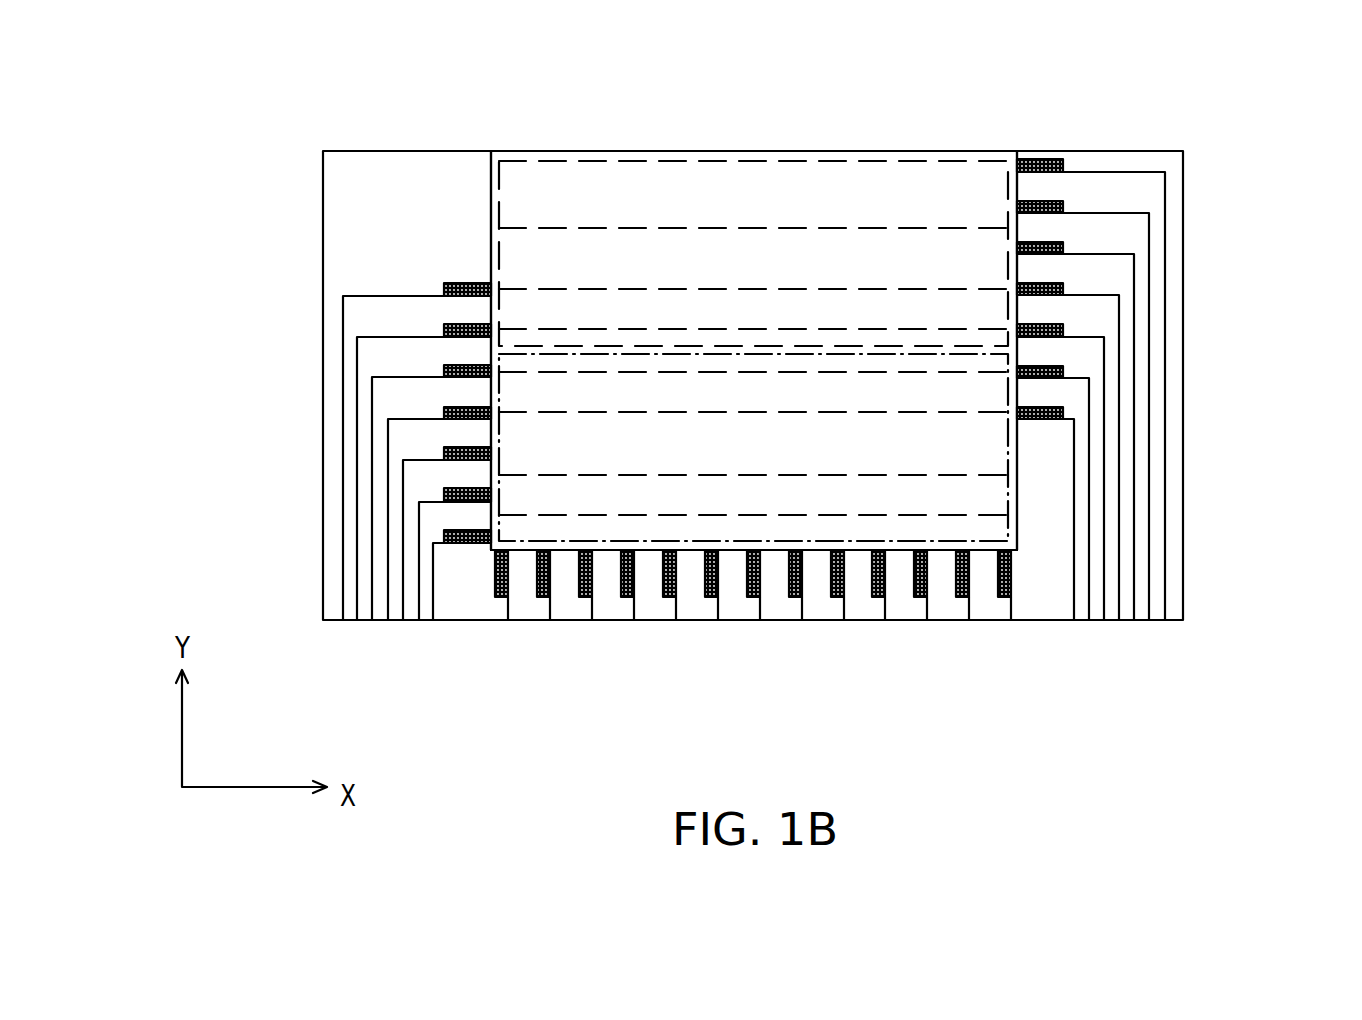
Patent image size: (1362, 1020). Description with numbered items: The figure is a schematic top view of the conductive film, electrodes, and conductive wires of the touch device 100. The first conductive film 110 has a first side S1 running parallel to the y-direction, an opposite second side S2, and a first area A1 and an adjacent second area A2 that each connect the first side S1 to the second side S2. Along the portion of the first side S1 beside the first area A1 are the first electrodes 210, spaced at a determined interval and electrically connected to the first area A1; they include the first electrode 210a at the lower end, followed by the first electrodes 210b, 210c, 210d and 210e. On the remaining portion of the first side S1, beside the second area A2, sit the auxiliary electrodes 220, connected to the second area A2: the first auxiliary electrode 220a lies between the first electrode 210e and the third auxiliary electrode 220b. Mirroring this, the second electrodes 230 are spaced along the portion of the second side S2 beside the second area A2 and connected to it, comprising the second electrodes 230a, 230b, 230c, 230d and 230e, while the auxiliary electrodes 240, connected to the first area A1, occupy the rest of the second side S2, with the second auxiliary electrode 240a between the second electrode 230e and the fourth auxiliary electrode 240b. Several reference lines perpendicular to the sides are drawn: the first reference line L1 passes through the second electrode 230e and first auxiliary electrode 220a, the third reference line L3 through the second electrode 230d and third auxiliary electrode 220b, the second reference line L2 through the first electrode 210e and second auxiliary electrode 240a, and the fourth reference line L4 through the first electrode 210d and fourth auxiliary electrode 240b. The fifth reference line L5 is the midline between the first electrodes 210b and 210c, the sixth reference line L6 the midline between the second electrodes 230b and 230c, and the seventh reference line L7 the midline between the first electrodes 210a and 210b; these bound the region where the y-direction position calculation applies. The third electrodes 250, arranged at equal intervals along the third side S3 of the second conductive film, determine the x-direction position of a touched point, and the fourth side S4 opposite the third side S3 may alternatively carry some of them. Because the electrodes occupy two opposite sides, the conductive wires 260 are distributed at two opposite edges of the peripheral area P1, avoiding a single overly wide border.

The touch device 100 is at (1265, 678).
The first conductive film 110 is at (835, 185).
The first electrodes 210 is at (337, 430).
The first electrode 210a is at (444, 536).
The first electrode 210b is at (444, 494).
The first electrode 210c is at (444, 453).
The first electrode 210d is at (444, 413).
The first electrode 210e is at (444, 375).
The auxiliary electrodes 220 is at (334, 245).
The first auxiliary electrode 220a is at (444, 333).
The third auxiliary electrode 220b is at (453, 283).
The second electrodes 230 is at (1170, 218).
The second electrode 230a is at (1065, 167).
The second electrode 230b is at (1065, 205).
The second electrode 230c is at (1065, 247).
The second electrode 230d is at (1065, 290).
The second electrode 230e is at (1065, 330).
The auxiliary electrodes 240 is at (1166, 382).
The second auxiliary electrode 240a is at (1065, 375).
The fourth auxiliary electrode 240b is at (1065, 412).
The third electrodes 250 is at (497, 578).
The conductive wires 260 is at (342, 593).
The first side S1 is at (491, 530).
The second side S2 is at (1017, 185).
The third side S3 is at (730, 551).
The fourth side S4 is at (708, 151).
The first reference line L1 is at (585, 330).
The second reference line L2 is at (628, 372).
The third reference line L3 is at (544, 290).
The fourth reference line L4 is at (708, 412).
The fifth reference line L5 is at (840, 475).
The sixth reference line L6 is at (881, 228).
The seventh reference line L7 is at (922, 517).
The first area A1 is at (765, 541).
The second area A2 is at (557, 160).
The peripheral area P1 is at (1033, 585).